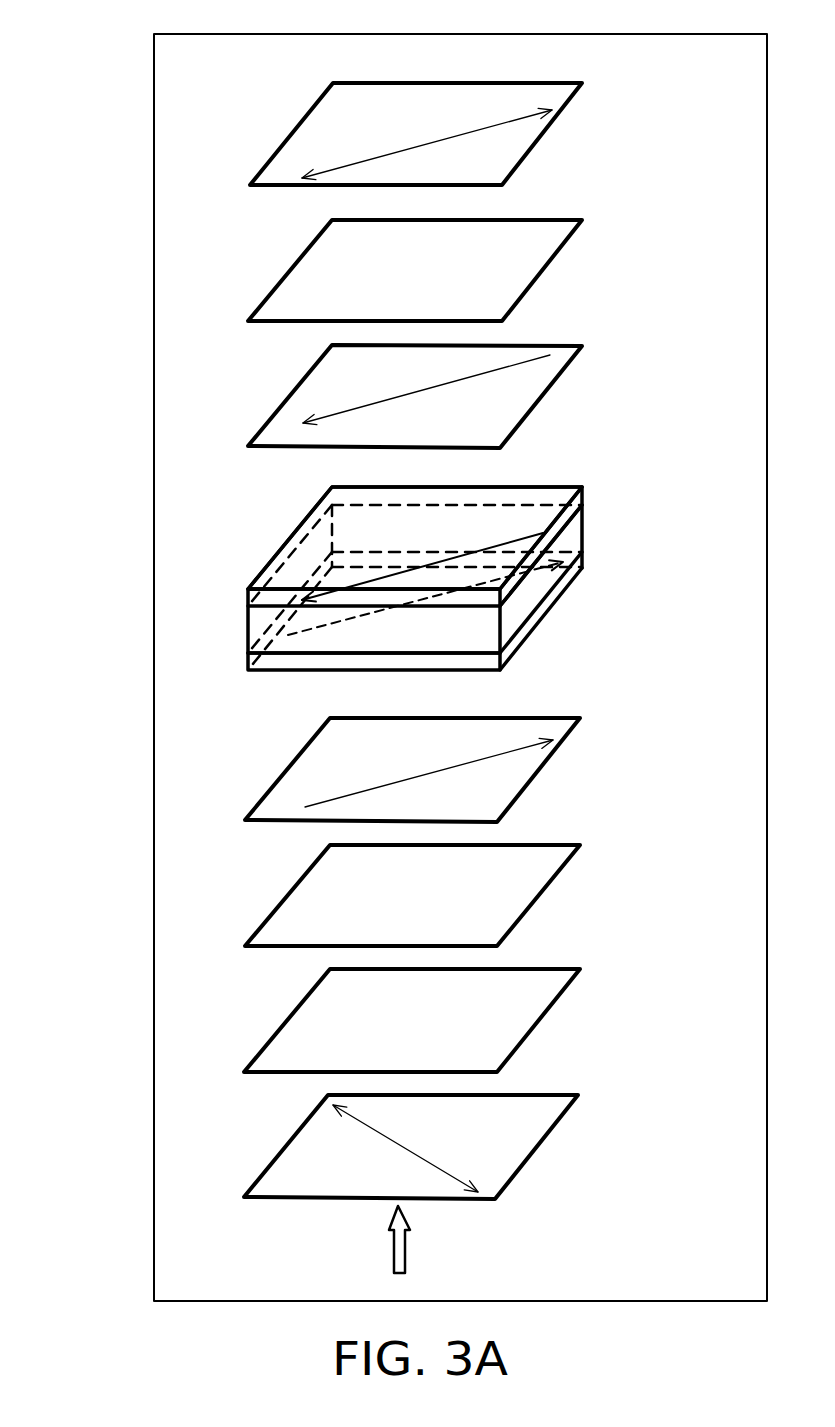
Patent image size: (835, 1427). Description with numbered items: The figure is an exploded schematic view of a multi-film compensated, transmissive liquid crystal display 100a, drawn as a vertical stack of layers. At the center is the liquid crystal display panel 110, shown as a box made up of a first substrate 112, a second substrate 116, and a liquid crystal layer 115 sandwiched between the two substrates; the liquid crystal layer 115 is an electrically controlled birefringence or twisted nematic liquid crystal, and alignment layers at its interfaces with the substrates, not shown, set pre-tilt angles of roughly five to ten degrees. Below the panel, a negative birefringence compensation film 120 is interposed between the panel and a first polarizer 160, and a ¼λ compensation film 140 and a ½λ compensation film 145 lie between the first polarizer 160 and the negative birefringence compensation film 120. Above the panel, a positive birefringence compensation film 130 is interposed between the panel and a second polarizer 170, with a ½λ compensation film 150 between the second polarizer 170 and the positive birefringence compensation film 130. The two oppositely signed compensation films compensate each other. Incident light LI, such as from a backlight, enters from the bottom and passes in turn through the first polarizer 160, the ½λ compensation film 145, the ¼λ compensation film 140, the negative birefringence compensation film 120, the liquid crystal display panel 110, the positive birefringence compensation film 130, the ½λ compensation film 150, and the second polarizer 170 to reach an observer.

The liquid crystal display 100a is at (105, 117).
The second polarizer 170 is at (518, 145).
The ½λ compensation film 150 is at (518, 282).
The positive birefringence compensation film 130 is at (518, 403).
The liquid crystal display panel 110 is at (580, 523).
The second substrate 116 is at (585, 498).
The liquid crystal layer 115 is at (570, 542).
The first substrate 112 is at (562, 595).
The negative birefringence compensation film 120 is at (515, 777).
The ¼λ compensation film 140 is at (515, 896).
The ½λ compensation film 145 is at (515, 1029).
The first polarizer 160 is at (515, 1152).
The incident light LI is at (405, 1250).